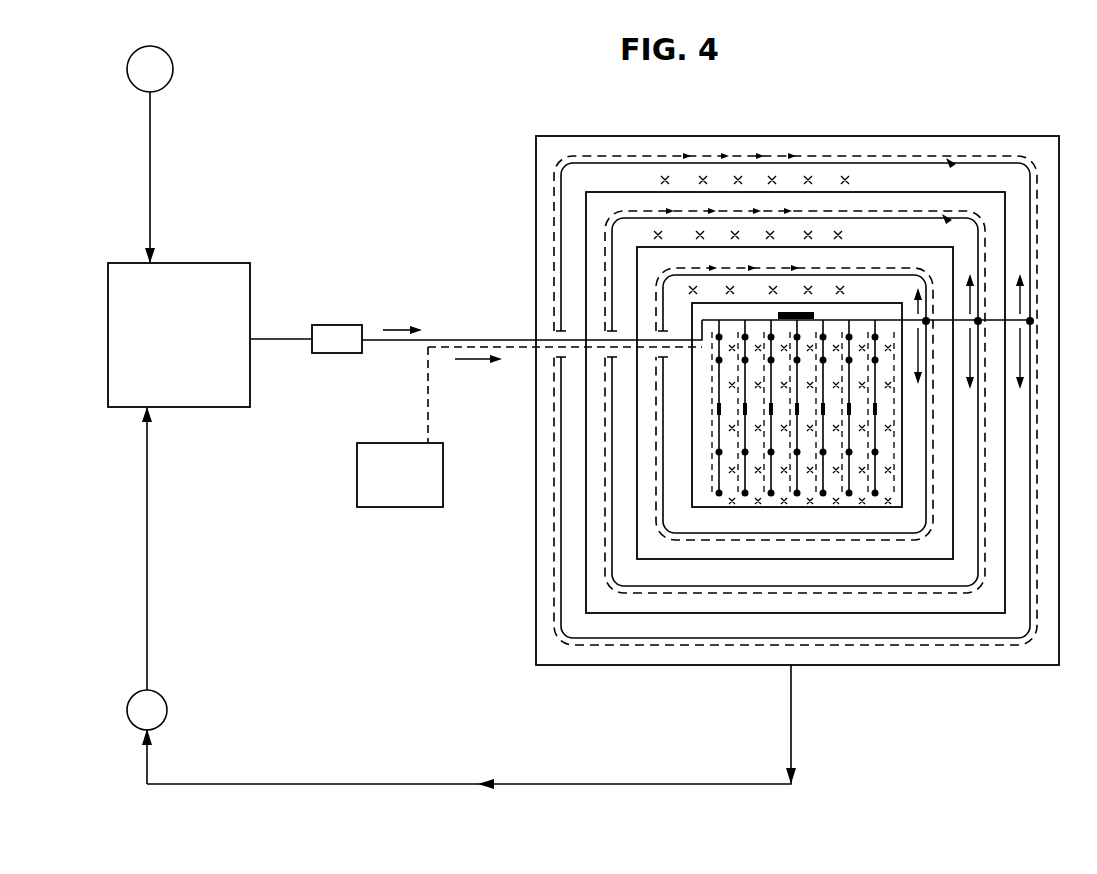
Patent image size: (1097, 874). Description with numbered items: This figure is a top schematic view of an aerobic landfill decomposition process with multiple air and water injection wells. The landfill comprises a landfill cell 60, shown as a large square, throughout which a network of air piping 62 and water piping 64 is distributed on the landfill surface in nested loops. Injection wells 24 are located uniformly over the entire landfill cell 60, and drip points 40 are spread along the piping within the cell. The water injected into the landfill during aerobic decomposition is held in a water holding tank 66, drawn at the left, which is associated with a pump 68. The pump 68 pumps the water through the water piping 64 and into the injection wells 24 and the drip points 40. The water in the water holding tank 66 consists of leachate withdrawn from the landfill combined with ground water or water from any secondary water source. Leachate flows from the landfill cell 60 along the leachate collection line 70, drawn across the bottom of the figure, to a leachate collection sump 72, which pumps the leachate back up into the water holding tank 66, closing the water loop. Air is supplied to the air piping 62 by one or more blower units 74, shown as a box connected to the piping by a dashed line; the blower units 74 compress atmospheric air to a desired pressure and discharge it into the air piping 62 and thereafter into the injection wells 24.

The injection wells 24 is at (948, 218).
The drip points 40 is at (735, 233).
The landfill cell 60 is at (834, 148).
The air piping 62 is at (552, 497).
The water piping 64 is at (880, 641).
The water holding tank 66 is at (226, 280).
The pump 68 is at (326, 322).
The leachate collection line 70 is at (423, 784).
The leachate collection sump 72 is at (166, 702).
The blower units 74 is at (386, 512).